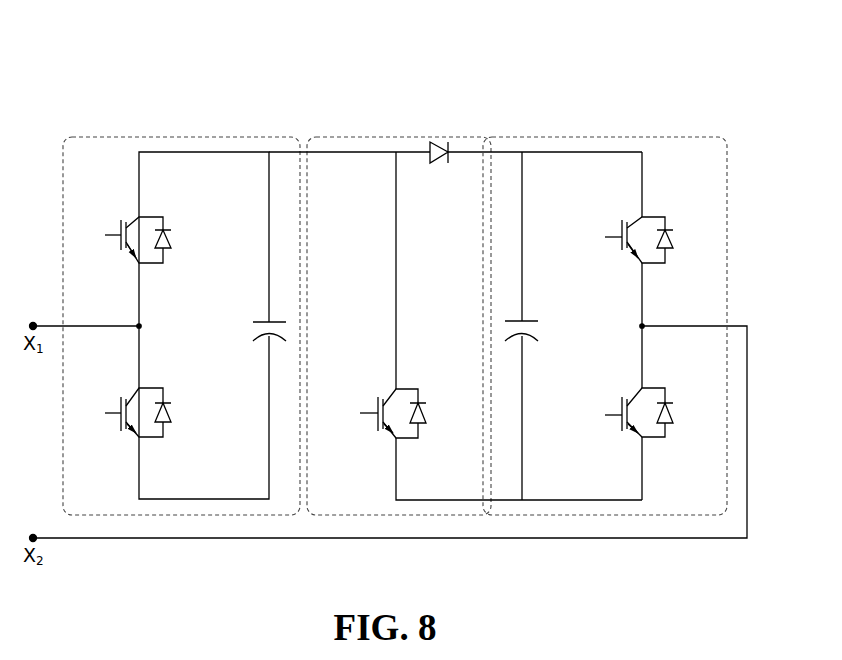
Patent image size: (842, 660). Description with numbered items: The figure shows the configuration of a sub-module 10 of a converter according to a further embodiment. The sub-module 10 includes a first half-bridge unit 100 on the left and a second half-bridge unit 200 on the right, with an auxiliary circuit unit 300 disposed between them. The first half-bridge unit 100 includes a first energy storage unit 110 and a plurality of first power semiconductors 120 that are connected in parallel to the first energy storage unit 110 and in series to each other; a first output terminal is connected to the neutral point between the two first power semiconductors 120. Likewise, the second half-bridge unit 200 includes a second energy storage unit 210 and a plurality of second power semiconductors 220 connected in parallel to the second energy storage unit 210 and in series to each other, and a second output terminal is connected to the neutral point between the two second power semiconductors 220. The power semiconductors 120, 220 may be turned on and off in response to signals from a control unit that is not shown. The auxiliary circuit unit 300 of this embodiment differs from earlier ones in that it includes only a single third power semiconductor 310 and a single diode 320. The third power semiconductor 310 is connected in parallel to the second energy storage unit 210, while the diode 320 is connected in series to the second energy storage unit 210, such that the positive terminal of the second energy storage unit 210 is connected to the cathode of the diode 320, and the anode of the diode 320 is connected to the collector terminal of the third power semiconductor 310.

The sub-module 10 is at (362, 72).
The first half-bridge unit 100 is at (194, 132).
The first energy storage unit 110 is at (268, 319).
The first power semiconductors 120 is at (161, 267).
The second half-bridge unit 200 is at (624, 133).
The second energy storage unit 210 is at (523, 319).
The second power semiconductors 220 is at (626, 267).
The auxiliary circuit unit 300 is at (383, 132).
The third power semiconductor 310 is at (401, 385).
The diode 320 is at (442, 140).